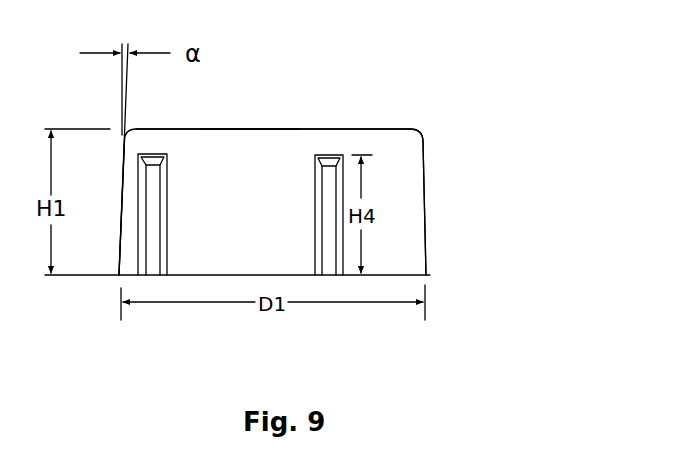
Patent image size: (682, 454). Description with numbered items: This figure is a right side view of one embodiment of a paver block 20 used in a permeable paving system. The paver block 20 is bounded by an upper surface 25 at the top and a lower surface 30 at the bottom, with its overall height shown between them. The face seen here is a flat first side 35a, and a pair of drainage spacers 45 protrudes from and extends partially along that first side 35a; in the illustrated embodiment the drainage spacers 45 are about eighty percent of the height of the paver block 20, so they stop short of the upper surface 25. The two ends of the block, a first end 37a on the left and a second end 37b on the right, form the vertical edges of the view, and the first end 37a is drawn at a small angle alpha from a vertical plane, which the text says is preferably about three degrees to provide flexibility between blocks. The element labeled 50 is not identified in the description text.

The paver block 20 is at (468, 124).
The upper surface 25 is at (331, 128).
The lower surface 30 is at (410, 279).
The first side 35a is at (248, 145).
The first end 37a is at (119, 262).
The second end 37b is at (427, 255).
The drainage spacers 45 is at (168, 225).
The rounded edge 50 is at (420, 127).